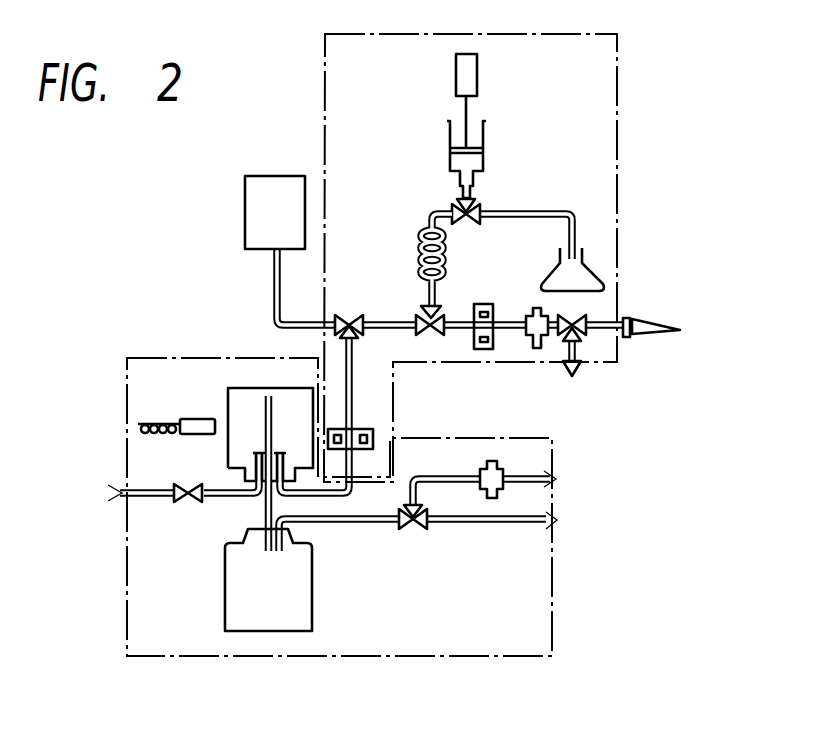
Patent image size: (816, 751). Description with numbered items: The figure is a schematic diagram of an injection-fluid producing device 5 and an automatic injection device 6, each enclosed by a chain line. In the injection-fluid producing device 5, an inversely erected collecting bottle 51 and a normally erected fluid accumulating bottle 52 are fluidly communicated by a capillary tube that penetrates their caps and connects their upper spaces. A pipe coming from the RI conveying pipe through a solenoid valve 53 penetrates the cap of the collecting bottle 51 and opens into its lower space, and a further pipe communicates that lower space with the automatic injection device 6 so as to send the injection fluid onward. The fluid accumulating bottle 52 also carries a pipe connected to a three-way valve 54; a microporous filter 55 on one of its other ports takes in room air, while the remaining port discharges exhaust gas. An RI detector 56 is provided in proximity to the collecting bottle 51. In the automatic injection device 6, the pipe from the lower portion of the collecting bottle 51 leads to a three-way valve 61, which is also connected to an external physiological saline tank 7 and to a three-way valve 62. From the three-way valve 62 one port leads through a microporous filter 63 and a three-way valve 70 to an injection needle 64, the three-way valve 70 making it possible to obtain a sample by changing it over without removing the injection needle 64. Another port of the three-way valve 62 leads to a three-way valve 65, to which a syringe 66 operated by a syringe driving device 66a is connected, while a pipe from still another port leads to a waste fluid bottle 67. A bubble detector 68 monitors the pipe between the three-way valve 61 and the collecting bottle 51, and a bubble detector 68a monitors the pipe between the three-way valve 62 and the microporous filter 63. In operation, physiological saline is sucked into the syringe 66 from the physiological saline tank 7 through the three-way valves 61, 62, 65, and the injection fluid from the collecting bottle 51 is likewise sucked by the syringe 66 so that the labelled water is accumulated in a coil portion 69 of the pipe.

The injection-fluid producing device 5 is at (557, 444).
The automatic injection device 6 is at (618, 100).
The physiological saline tank 7 is at (245, 203).
The collecting bottle 51 is at (253, 387).
The fluid accumulating bottle 52 is at (225, 580).
The solenoid valve 53 is at (199, 500).
The three-way valve 54 is at (416, 530).
The microporous filter 55 is at (491, 460).
The RI detector 56 is at (200, 418).
The three-way valve 61 is at (350, 313).
The three-way valve 62 is at (432, 335).
The microporous filter 63 is at (537, 348).
The injection needle 64 is at (668, 324).
The three-way valve 65 is at (476, 207).
The syringe 66 is at (485, 128).
The syringe driving device 66a is at (477, 62).
The waste fluid bottle 67 is at (598, 277).
The bubble detector 68 is at (373, 436).
The bubble detector 68a is at (484, 303).
The coil portion 69 is at (421, 240).
The three-way valve 70 is at (578, 337).